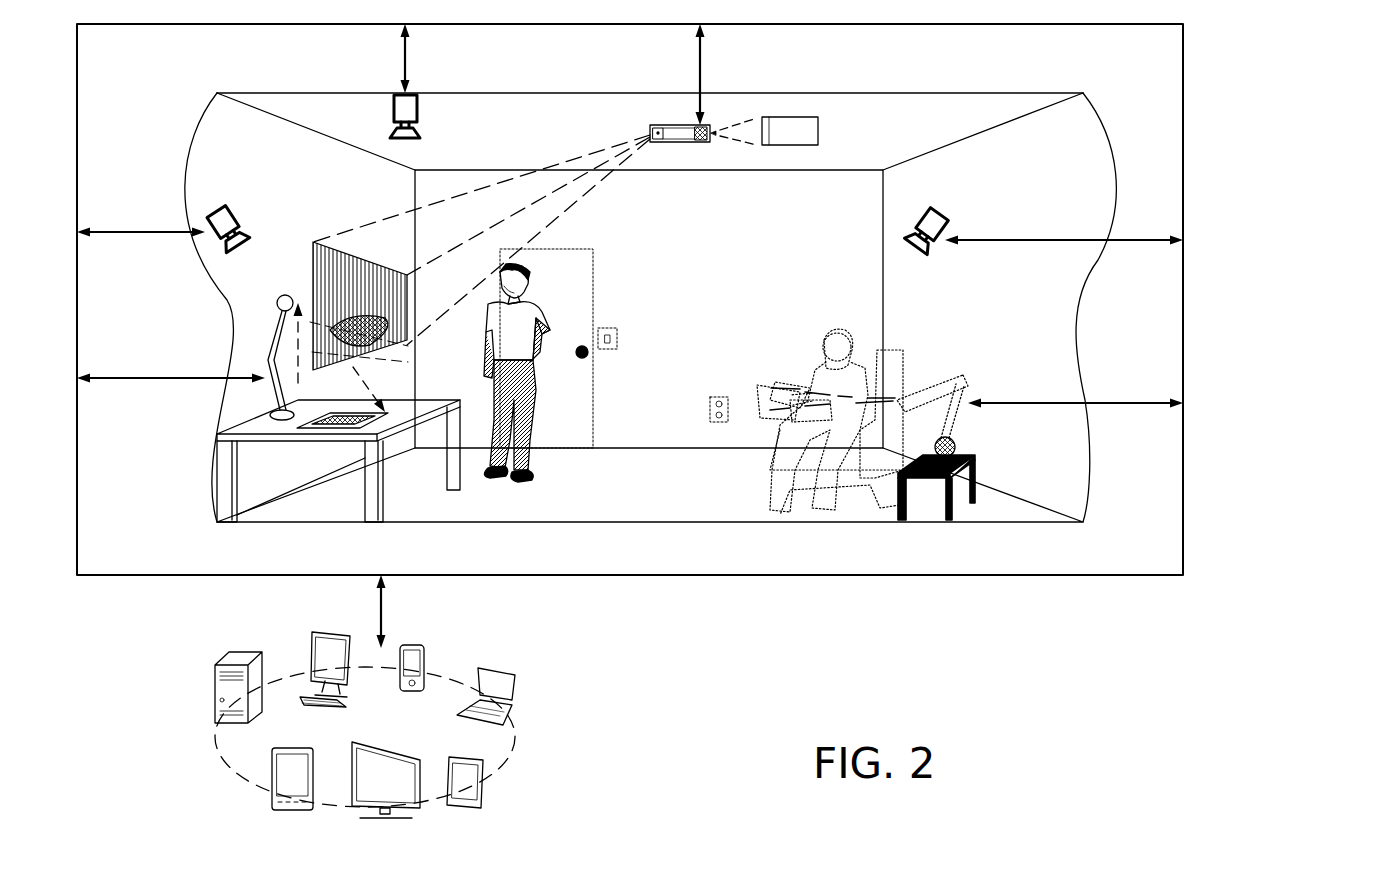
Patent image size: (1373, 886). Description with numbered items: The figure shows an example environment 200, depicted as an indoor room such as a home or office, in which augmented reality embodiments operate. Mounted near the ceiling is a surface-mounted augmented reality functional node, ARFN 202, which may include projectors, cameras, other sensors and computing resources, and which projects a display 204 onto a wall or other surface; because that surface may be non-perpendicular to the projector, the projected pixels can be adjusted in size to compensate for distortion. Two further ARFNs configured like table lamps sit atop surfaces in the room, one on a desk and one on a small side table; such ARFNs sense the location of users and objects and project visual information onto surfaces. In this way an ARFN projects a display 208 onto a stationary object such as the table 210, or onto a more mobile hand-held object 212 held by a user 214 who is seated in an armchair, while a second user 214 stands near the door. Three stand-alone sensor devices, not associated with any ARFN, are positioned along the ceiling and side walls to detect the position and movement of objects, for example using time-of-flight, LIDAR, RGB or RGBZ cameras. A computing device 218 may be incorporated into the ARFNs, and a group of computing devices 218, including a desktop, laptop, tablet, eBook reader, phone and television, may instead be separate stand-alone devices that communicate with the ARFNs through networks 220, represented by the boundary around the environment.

The environment 200 is at (1258, 88).
The surface-mounted augmented reality functional node (ARFN) 202 is at (680, 112).
The display 204 is at (343, 265).
The display 208 is at (350, 428).
The table 210 is at (365, 505).
The hand-held object 212 is at (762, 422).
The user 214 is at (548, 294).
The computing device 218 is at (790, 130).
The networks 220 is at (758, 575).